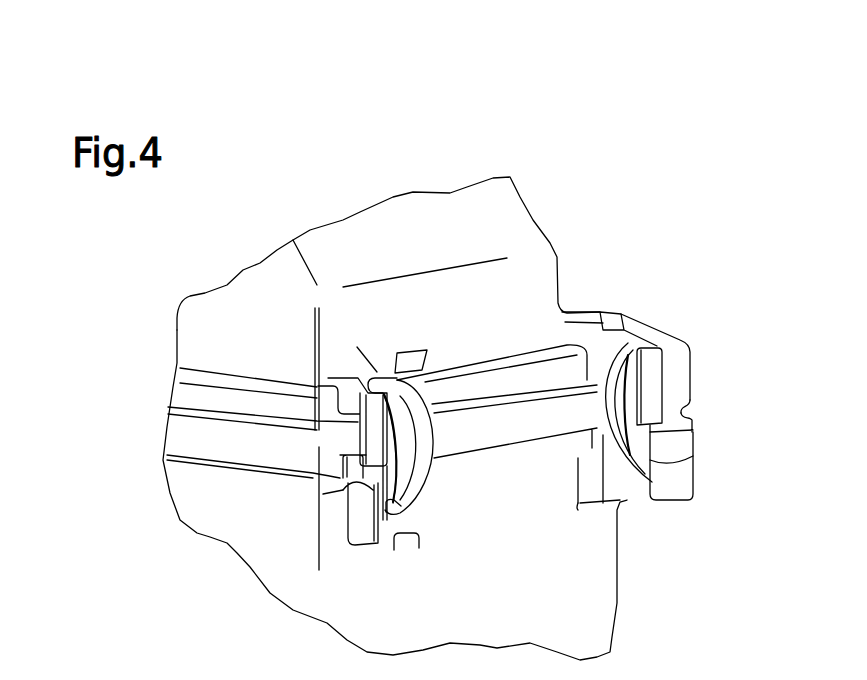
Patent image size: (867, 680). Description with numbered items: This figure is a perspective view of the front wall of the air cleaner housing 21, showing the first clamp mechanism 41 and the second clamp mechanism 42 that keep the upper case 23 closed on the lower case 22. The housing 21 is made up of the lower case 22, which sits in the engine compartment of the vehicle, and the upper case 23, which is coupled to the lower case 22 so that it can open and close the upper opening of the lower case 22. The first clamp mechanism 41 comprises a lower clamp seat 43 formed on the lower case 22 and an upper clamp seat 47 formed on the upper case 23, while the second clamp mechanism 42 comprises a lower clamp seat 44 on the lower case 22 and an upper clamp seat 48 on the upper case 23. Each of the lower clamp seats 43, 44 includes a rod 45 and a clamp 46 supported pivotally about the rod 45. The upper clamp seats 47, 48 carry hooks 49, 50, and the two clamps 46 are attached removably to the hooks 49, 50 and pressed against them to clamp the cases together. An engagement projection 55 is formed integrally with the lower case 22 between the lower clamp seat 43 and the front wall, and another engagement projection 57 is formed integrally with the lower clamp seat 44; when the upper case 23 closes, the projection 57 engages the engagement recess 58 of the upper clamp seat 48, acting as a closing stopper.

The housing 21 is at (423, 208).
The lower case 22 is at (612, 630).
The upper case 23 is at (518, 213).
The first clamp mechanism 41 is at (347, 523).
The second clamp mechanism 42 is at (671, 428).
The lower clamp seat 43 is at (409, 534).
The lower clamp seat 44 is at (673, 495).
The rod 45 is at (388, 515).
The clamp 46 is at (430, 474).
The upper clamp seat 47 is at (345, 408).
The upper clamp seat 48 is at (690, 363).
The hook 49 is at (380, 381).
The hook 50 is at (678, 340).
The engagement projection 55 is at (340, 474).
The engagement projection 57 is at (695, 420).
The engagement recess 58 is at (690, 408).